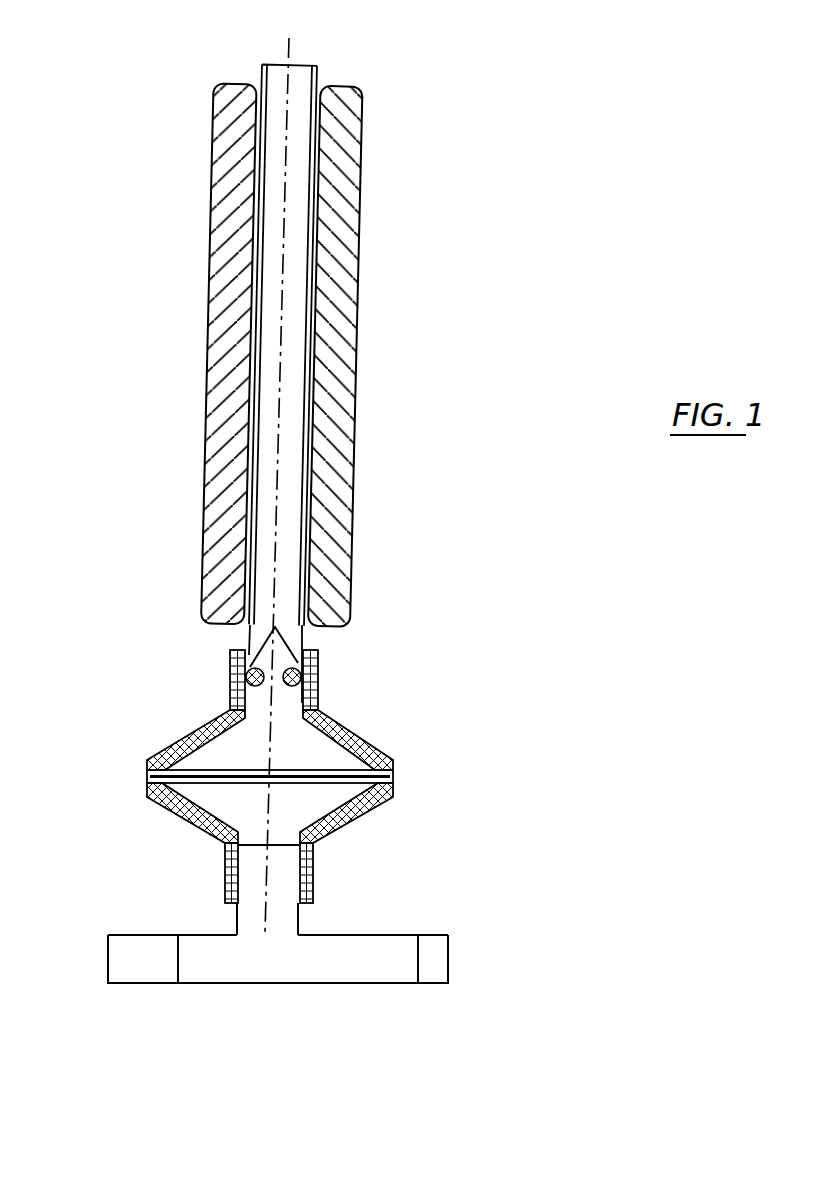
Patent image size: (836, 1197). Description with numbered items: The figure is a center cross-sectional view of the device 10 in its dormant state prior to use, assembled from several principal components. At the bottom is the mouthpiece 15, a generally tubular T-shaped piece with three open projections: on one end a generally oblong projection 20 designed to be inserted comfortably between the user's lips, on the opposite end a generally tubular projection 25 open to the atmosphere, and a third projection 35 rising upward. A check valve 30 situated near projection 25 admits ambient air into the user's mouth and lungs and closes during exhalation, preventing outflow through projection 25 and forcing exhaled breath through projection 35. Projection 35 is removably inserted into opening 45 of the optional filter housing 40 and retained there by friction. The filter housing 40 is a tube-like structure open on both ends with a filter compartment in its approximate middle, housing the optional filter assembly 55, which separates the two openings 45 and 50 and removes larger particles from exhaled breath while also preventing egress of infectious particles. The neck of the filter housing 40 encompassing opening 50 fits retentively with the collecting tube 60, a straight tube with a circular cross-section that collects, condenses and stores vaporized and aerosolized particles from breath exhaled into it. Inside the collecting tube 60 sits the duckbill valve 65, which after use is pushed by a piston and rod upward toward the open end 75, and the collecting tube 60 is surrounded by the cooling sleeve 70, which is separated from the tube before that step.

The device 10 is at (174, 70).
The mouthpiece 15 is at (335, 968).
The oblong projection 20 is at (435, 932).
The projection 25 is at (108, 985).
The check valve 30 is at (178, 985).
The projection 35 is at (297, 920).
The filter housing 40 is at (340, 725).
The opening 45 is at (228, 912).
The opening 50 is at (312, 643).
The filter assembly 55 is at (395, 777).
The collecting tube 60 is at (292, 212).
The duckbill valve 65 is at (247, 632).
The cooling sleeve 70 is at (351, 374).
The open end 75 is at (302, 63).